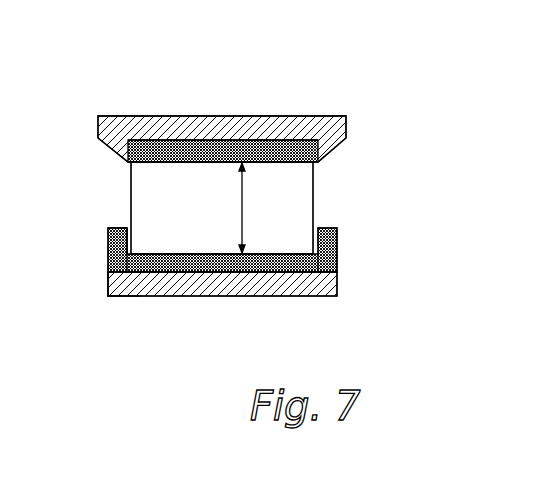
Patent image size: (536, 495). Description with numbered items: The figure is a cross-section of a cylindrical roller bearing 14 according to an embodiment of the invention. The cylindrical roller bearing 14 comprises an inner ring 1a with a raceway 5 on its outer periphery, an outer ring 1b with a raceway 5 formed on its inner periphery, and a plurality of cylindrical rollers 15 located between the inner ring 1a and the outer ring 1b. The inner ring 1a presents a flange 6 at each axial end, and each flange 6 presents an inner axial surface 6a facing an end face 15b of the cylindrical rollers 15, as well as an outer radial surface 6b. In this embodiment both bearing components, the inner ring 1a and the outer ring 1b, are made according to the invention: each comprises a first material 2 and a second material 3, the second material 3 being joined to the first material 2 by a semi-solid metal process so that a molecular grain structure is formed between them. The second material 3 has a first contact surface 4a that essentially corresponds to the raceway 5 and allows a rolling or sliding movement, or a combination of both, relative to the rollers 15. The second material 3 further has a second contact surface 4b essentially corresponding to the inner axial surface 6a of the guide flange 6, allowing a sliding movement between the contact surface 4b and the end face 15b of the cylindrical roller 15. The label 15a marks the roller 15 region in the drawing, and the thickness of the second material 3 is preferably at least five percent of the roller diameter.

The inner ring 1a is at (317, 287).
The outer ring 1b is at (113, 116).
The first material 2 is at (290, 116).
The second material 3 is at (242, 139).
The first contact surface 4a is at (128, 178).
The second contact surface 4b is at (128, 236).
The raceway 5 is at (196, 140).
The flange 6 is at (108, 250).
The inner axial surface 6a is at (112, 296).
The outer radial surface 6b is at (108, 229).
The cylindrical roller bearing 14 is at (384, 84).
The cylindrical roller 15 is at (290, 190).
The top face of block 15a is at (222, 186).
The end face 15b is at (318, 198).